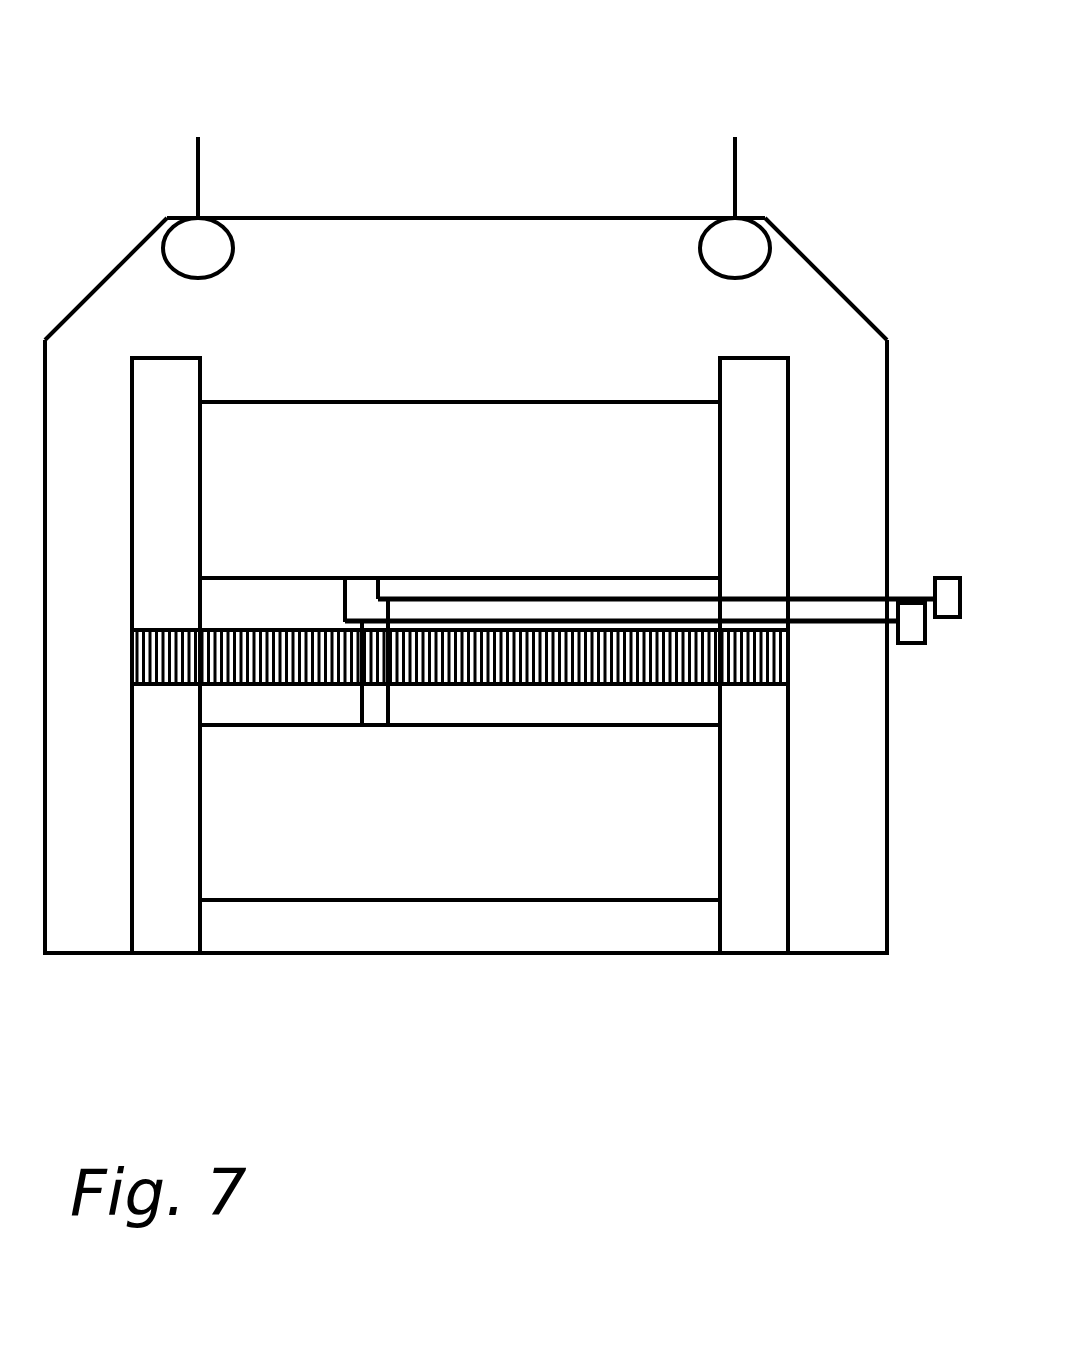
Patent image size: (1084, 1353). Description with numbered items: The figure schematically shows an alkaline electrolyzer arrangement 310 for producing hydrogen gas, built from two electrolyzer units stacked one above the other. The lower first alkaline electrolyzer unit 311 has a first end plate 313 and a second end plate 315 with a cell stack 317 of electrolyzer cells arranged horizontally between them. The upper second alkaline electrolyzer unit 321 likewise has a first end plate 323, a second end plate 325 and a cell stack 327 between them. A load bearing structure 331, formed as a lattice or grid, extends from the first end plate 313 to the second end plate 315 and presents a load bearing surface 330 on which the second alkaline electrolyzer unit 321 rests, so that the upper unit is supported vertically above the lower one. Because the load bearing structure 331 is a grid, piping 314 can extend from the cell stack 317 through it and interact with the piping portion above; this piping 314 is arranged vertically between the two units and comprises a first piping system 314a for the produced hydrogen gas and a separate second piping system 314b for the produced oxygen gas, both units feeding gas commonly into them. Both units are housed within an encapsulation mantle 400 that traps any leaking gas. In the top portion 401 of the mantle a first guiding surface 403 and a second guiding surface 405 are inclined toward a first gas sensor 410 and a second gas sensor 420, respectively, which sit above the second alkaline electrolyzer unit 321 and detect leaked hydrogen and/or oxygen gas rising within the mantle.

The alkaline electrolyzer arrangement 310 is at (195, 97).
The first alkaline electrolyzer unit 311 is at (523, 930).
The first end plate 313 is at (153, 932).
The piping 314 is at (900, 567).
The first piping system 314a is at (805, 587).
The second piping system 314b is at (810, 638).
The second end plate 315 is at (750, 927).
The cell stack 317 is at (452, 875).
The second alkaline electrolyzer unit 321 is at (532, 360).
The first end plate 323 is at (188, 402).
The second end plate 325 is at (735, 398).
The cell stack 327 is at (428, 435).
The load bearing surface 330 is at (148, 630).
The load bearing structure 331 is at (178, 615).
The encapsulation mantle 400 is at (416, 223).
The top portion 401 is at (900, 325).
The first guiding surface 403 is at (138, 238).
The second guiding surface 405 is at (818, 277).
The first gas sensor 410 is at (222, 240).
The second gas sensor 420 is at (707, 233).